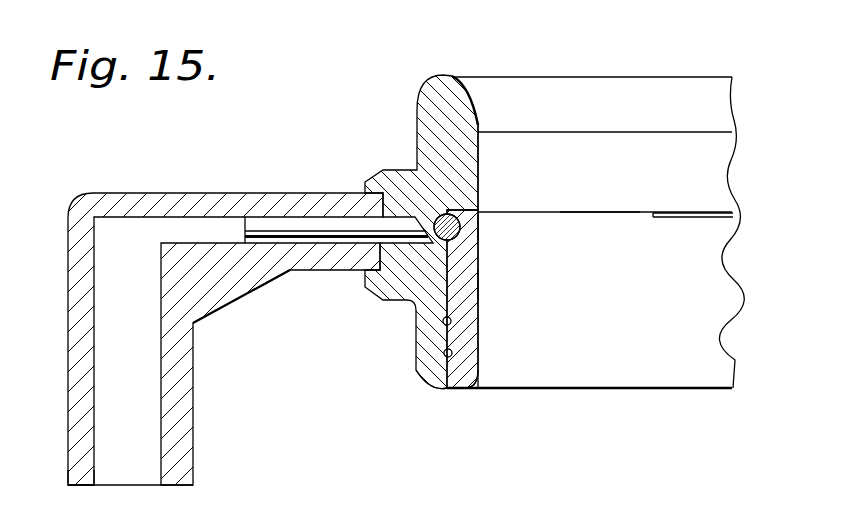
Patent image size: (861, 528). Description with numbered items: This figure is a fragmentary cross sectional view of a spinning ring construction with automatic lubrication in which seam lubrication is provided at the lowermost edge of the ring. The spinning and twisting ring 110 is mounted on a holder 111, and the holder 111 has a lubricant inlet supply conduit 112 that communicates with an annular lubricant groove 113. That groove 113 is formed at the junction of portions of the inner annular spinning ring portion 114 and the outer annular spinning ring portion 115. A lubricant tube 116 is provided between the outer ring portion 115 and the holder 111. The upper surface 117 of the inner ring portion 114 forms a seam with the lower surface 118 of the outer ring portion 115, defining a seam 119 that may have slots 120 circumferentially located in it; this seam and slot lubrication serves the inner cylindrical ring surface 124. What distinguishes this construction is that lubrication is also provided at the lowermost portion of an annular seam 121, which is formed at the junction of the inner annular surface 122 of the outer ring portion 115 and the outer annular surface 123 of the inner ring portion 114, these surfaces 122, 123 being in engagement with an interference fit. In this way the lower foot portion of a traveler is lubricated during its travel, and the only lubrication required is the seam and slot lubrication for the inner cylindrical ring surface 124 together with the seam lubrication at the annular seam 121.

The spinning and twisting ring 110 is at (442, 87).
The holder 111 is at (281, 200).
The lubricant inlet supply conduit 112 is at (96, 453).
The annular lubricant groove 113 is at (462, 205).
The inner annular spinning ring portion 114 is at (477, 390).
The outer annular spinning ring portion 115 is at (412, 168).
The lubricant tube 116 is at (303, 236).
The upper surface 117 is at (446, 210).
The lower surface 118 is at (478, 227).
The seam 119 is at (596, 214).
The slots 120 is at (703, 218).
The annular seam 121 is at (447, 390).
The inner annular surface 122 is at (447, 356).
The outer annular surface 123 is at (452, 319).
The inner cylindrical ring surface 124 is at (478, 283).